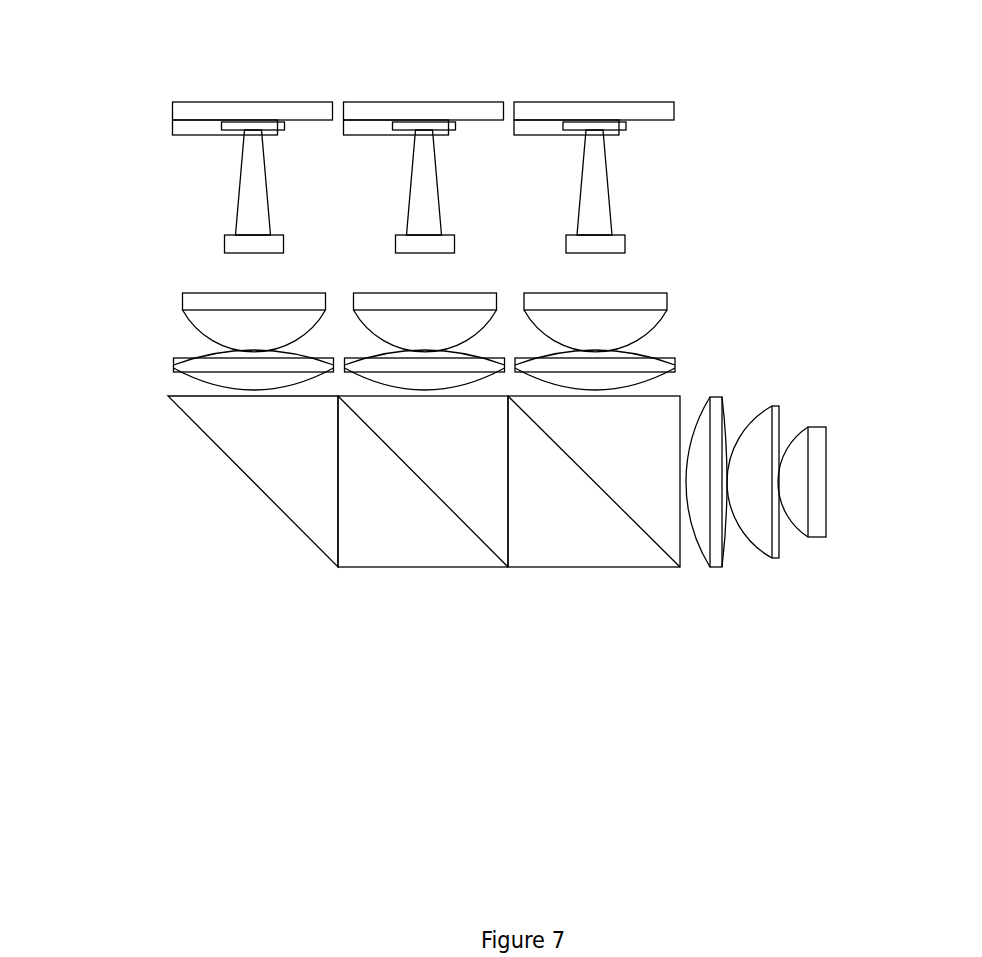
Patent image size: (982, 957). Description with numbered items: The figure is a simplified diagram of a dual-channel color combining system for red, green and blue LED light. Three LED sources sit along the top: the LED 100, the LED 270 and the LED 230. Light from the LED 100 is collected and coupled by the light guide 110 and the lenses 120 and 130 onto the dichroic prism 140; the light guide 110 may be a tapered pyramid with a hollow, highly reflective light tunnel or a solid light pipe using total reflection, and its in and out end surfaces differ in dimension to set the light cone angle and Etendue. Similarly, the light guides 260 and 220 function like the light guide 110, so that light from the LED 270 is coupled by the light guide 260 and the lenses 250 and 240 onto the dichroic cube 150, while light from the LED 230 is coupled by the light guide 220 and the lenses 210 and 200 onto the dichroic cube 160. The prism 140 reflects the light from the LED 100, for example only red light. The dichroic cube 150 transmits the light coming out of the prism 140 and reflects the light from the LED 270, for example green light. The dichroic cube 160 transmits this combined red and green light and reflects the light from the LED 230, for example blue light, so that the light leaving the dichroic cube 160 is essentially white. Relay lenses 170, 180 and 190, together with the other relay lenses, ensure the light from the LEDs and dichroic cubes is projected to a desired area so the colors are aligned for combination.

The LED 100 is at (247, 123).
The light guide 110 is at (245, 197).
The lens 120 is at (218, 320).
The lens 130 is at (212, 363).
The dichroic prism 140 is at (255, 443).
The dichroic cube 150 is at (415, 498).
The dichroic cube 160 is at (592, 498).
The relay lens 170 is at (698, 498).
The relay lens 180 is at (760, 498).
The relay lens 190 is at (813, 498).
The lens 200 is at (647, 363).
The lens 210 is at (637, 317).
The light guide 220 is at (592, 213).
The LED 230 is at (592, 124).
The lens 240 is at (452, 362).
The lens 250 is at (425, 318).
The light guide 260 is at (425, 187).
The LED 270 is at (415, 123).